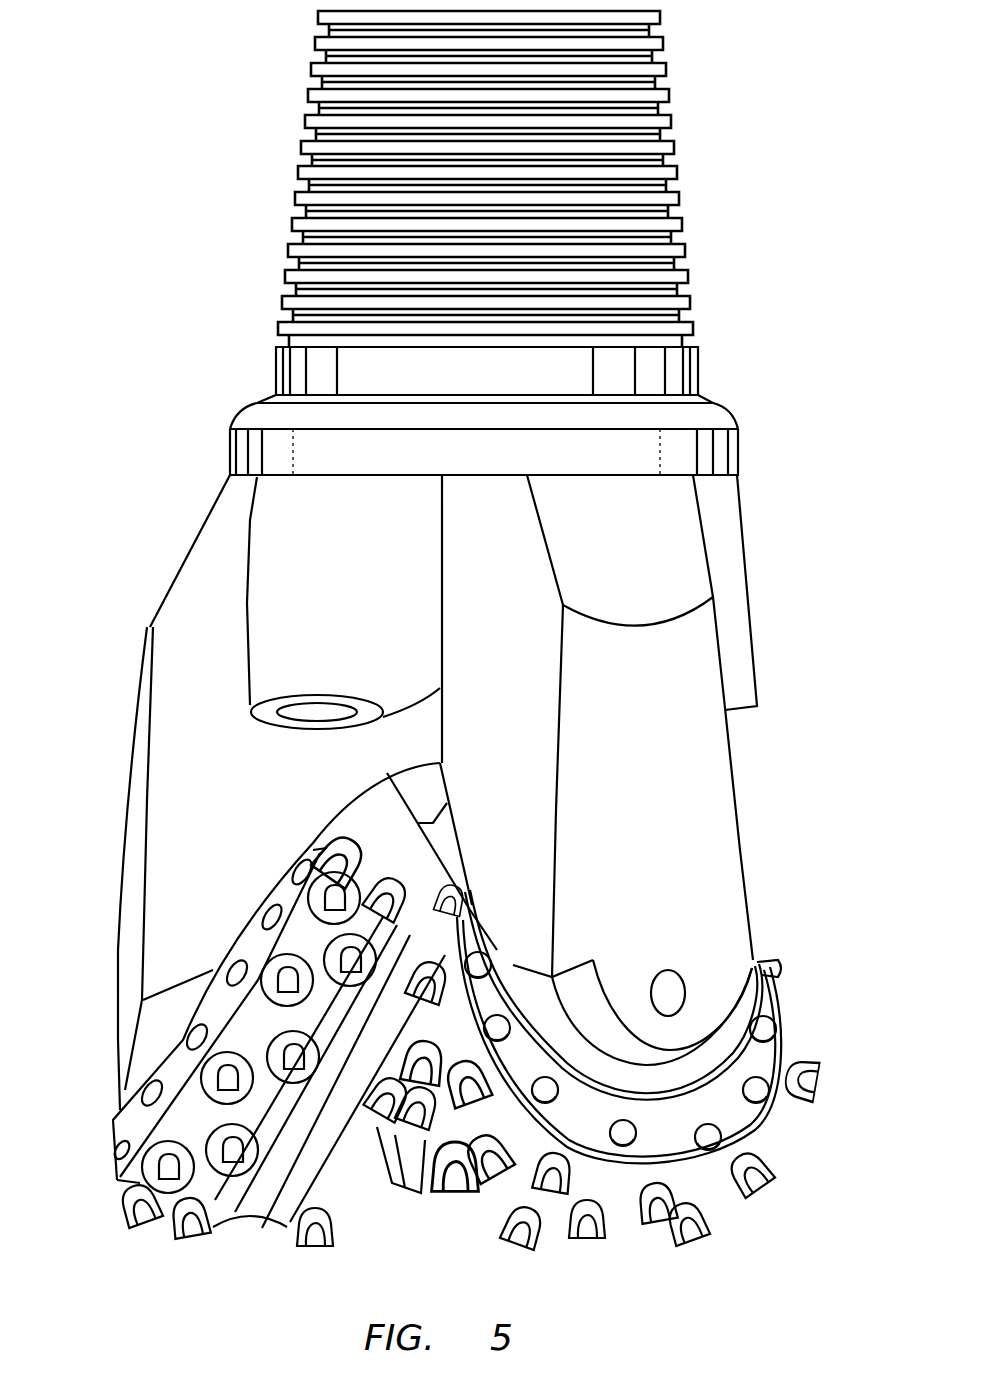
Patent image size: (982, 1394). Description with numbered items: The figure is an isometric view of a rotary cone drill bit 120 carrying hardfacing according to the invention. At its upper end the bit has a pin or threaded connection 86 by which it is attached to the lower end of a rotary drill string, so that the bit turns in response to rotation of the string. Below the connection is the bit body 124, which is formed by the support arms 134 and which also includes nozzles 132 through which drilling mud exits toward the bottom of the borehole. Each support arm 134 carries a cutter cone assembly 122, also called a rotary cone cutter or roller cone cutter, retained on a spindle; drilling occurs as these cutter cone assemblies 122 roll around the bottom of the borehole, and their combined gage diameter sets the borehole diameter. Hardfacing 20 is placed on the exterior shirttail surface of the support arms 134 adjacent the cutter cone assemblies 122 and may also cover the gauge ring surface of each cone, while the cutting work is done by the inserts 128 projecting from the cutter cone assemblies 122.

The threaded connection 86 is at (668, 95).
The drill bit 120 is at (181, 549).
The bit body 124 is at (234, 604).
The nozzles 132 is at (267, 708).
The support arms 134 is at (163, 813).
The cutter cone assemblies 122 is at (223, 1197).
The hardfacing 20 is at (245, 948).
The inserts 128 is at (182, 1230).